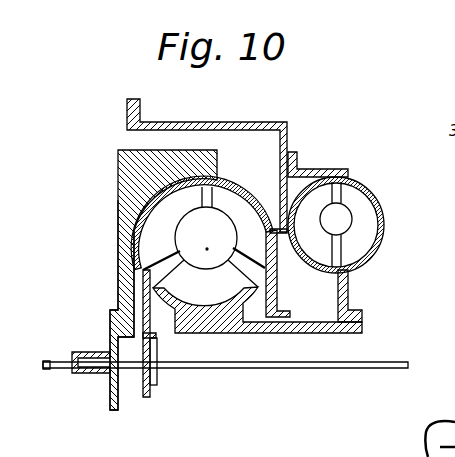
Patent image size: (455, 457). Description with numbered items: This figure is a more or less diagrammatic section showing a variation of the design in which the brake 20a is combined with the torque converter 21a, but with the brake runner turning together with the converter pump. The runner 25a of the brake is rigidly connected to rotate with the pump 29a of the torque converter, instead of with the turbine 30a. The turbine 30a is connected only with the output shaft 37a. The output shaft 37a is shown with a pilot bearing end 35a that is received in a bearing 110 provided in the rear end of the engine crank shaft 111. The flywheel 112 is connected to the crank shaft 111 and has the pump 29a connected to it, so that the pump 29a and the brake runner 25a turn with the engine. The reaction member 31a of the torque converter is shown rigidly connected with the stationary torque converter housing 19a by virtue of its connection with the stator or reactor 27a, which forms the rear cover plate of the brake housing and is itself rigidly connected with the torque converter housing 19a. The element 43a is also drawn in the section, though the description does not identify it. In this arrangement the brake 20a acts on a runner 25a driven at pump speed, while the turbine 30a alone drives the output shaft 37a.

The torque converter housing 19a is at (211, 122).
The pump 29a is at (243, 186).
The runner 25a is at (304, 186).
The brake 20a is at (345, 219).
The stator or reactor 27a is at (367, 267).
The turbine 30a is at (137, 173).
The torque converter 21a is at (173, 204).
The flywheel 112 is at (117, 243).
The bearing 110 is at (88, 352).
The engine crank shaft 111 is at (47, 366).
The pilot bearing end 35a is at (100, 372).
The reaction member 31a is at (210, 300).
The output shaft 37a is at (265, 369).
The support base 43a is at (327, 336).